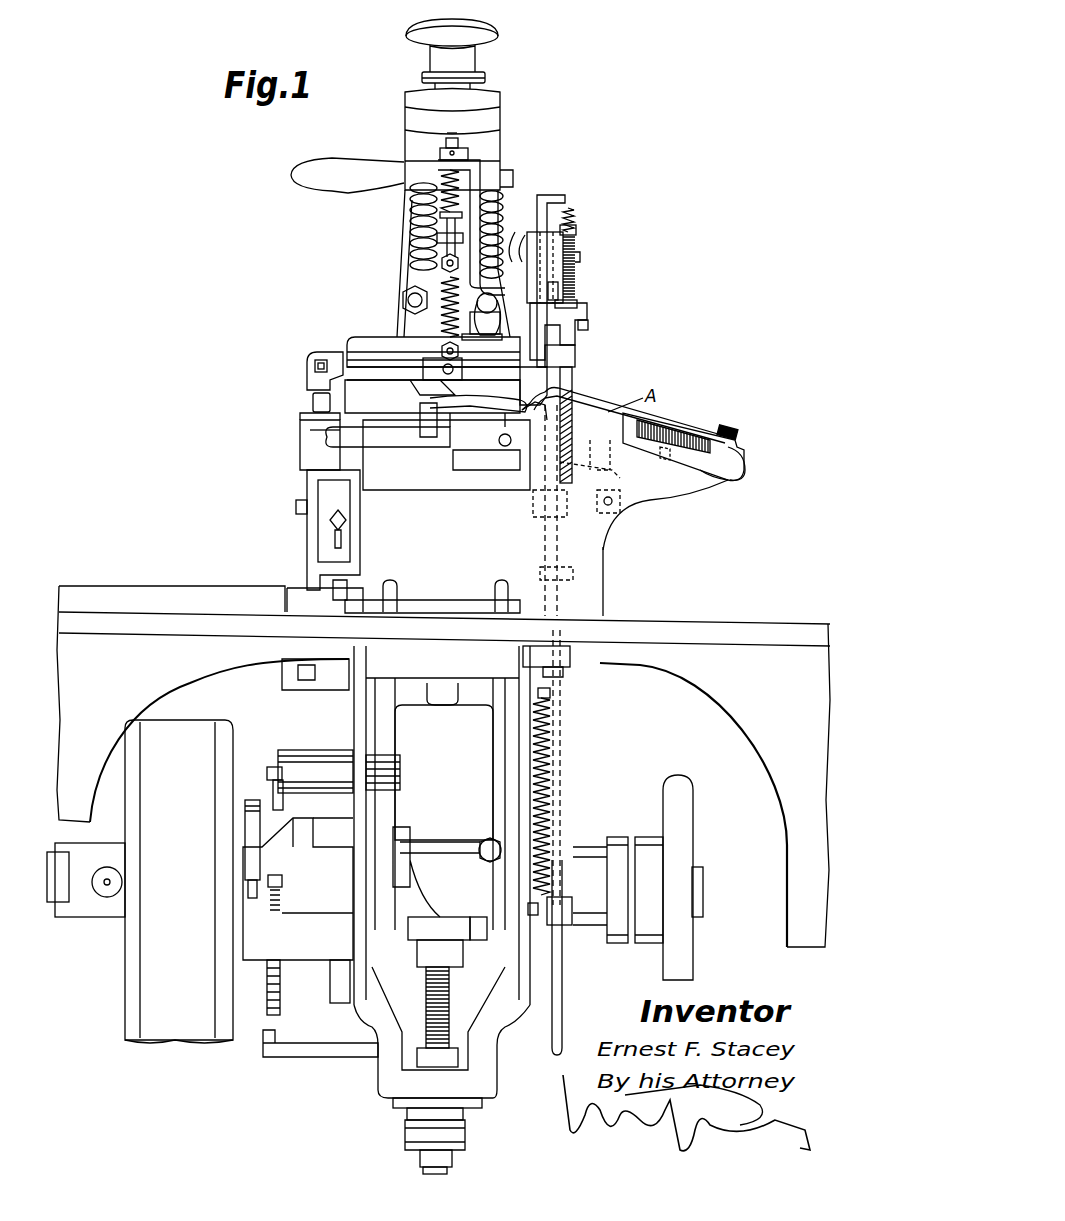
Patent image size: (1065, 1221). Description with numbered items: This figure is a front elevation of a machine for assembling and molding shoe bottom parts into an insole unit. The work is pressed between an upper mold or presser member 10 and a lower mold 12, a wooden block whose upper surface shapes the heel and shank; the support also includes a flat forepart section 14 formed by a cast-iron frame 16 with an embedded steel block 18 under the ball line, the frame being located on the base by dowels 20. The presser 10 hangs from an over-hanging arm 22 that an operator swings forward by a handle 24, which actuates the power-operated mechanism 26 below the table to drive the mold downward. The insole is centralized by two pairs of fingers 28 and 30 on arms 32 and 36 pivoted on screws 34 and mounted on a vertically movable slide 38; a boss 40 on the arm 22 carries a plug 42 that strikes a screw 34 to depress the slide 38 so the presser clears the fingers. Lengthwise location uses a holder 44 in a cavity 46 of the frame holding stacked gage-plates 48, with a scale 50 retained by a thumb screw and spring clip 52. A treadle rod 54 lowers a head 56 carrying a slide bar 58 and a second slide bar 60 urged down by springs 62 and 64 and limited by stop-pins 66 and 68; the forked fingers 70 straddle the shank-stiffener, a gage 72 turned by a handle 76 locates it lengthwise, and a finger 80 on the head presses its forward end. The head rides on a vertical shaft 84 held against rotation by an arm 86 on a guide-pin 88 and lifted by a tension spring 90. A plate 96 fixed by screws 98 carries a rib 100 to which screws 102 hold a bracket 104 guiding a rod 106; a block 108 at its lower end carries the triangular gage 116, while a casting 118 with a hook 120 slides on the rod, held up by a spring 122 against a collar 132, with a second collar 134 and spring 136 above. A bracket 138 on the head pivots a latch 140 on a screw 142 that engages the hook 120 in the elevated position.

The mold member 10 is at (372, 355).
The mold member 12 is at (425, 484).
The forepart section 14 is at (598, 400).
The cast-iron frame 16 is at (642, 502).
The steel block 18 is at (555, 405).
The dowels 20 is at (498, 588).
The over-hanging arm 22 is at (405, 148).
The handle 24 is at (322, 166).
The power-operated mechanism 26 is at (606, 752).
The positioning fingers 28 is at (520, 412).
The positioning fingers 30 is at (420, 408).
The arms 32 is at (372, 440).
The screws 34 is at (300, 420).
The arms 36 is at (380, 427).
The carriage or slide 38 is at (307, 473).
The boss 40 is at (316, 354).
The plug 42 is at (313, 403).
The rectangular holder 44 is at (740, 455).
The cavity 46 is at (724, 480).
The gaging plates 48 is at (668, 428).
The scale 50 is at (692, 430).
The thumb screw and spring clip 52 is at (733, 428).
The treadle rod 54 is at (562, 1002).
The head 56 is at (580, 297).
The slide bar 58 is at (562, 246).
The slide bar 60 is at (538, 200).
The spring 62 is at (575, 278).
The spring 64 is at (570, 214).
The stop-pin 66 is at (574, 258).
The stop-pin 68 is at (574, 230).
The fingers 70 is at (575, 357).
The gage 72 is at (548, 340).
The handle 76 is at (588, 326).
The finger 80 is at (533, 386).
The vertical shaft 84 is at (572, 377).
The arm 86 is at (567, 512).
The guide-pin 88 is at (620, 476).
The tension spring 90 is at (545, 745).
The plate 96 is at (432, 322).
The screws 98 is at (403, 300).
The vertical flange or rib 100 is at (492, 322).
The screws 102 is at (478, 340).
The fixed bracket 104 is at (437, 237).
The rod 106 is at (460, 135).
The block 108 is at (460, 372).
The gage 116 is at (420, 393).
The casting 118 is at (476, 176).
The arm or hook 120 is at (504, 268).
The spring 122 is at (445, 292).
The collar 132 is at (447, 150).
The collar 134 is at (440, 216).
The spring 136 is at (440, 198).
The triangular shaped bracket 138 is at (558, 292).
The latch or pawl 140 is at (527, 237).
The screw 142 is at (580, 260).